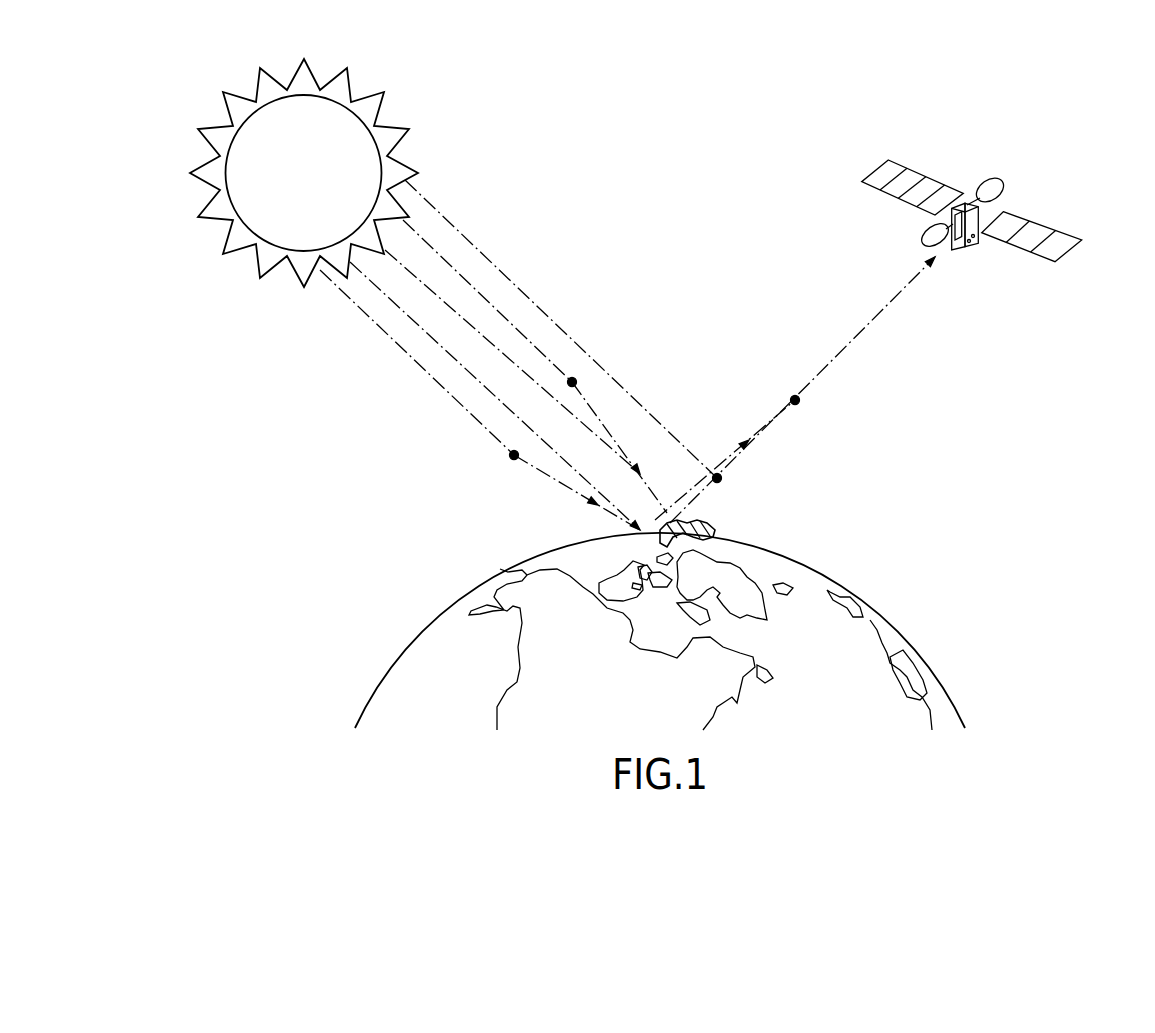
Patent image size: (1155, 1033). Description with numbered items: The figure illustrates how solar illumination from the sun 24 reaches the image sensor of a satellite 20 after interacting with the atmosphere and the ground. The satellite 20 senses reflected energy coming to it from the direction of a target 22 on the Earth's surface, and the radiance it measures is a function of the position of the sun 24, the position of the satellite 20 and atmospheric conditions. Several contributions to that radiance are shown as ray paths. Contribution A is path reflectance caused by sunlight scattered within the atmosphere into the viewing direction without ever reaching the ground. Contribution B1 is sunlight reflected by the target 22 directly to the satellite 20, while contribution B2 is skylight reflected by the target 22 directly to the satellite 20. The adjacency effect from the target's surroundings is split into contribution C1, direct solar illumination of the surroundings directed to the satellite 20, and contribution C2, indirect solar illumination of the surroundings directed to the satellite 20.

The sun 24 is at (400, 111).
The satellite 20 is at (1028, 205).
The target 22 is at (724, 522).
The path reflectance contribution A is at (633, 400).
The sunlight reflected by the target B1 is at (427, 287).
The skylight reflected by the target B2 is at (472, 290).
The direct adjacency contribution C1 is at (392, 304).
The indirect adjacency contribution C2 is at (402, 350).